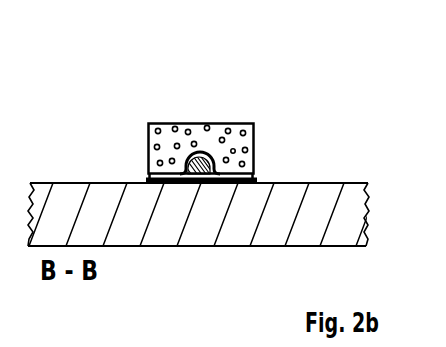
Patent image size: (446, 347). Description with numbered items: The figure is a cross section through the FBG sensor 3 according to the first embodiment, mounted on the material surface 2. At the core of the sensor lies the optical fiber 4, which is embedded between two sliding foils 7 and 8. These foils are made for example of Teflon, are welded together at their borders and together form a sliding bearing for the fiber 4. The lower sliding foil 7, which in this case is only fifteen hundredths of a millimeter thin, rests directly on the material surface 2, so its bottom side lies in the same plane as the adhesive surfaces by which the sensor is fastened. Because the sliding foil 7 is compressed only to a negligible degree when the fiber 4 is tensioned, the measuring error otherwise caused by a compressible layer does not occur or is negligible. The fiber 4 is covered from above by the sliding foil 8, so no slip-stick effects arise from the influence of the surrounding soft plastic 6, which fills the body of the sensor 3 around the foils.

The material surface 2 is at (67, 178).
The FBG sensor 3 is at (231, 103).
The optical fiber 4 is at (202, 156).
The soft plastic 6 is at (164, 130).
The sliding foil 7 is at (257, 178).
The sliding foil 8 is at (226, 150).